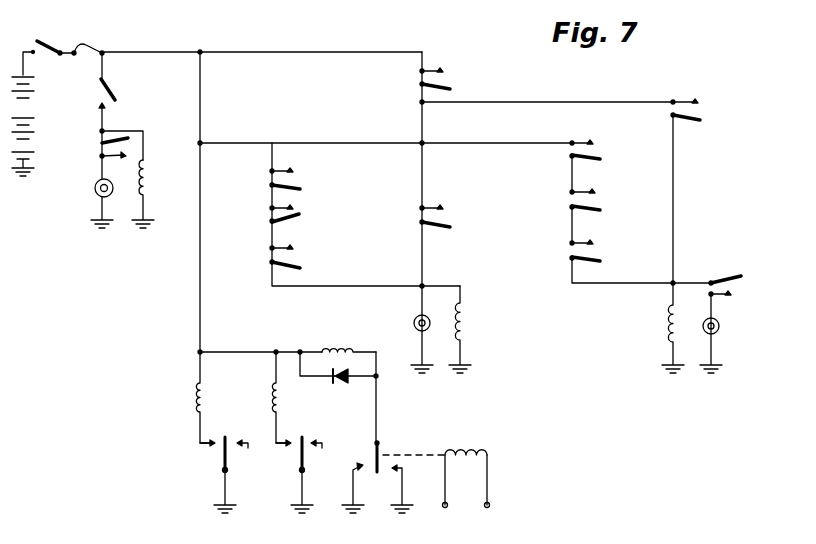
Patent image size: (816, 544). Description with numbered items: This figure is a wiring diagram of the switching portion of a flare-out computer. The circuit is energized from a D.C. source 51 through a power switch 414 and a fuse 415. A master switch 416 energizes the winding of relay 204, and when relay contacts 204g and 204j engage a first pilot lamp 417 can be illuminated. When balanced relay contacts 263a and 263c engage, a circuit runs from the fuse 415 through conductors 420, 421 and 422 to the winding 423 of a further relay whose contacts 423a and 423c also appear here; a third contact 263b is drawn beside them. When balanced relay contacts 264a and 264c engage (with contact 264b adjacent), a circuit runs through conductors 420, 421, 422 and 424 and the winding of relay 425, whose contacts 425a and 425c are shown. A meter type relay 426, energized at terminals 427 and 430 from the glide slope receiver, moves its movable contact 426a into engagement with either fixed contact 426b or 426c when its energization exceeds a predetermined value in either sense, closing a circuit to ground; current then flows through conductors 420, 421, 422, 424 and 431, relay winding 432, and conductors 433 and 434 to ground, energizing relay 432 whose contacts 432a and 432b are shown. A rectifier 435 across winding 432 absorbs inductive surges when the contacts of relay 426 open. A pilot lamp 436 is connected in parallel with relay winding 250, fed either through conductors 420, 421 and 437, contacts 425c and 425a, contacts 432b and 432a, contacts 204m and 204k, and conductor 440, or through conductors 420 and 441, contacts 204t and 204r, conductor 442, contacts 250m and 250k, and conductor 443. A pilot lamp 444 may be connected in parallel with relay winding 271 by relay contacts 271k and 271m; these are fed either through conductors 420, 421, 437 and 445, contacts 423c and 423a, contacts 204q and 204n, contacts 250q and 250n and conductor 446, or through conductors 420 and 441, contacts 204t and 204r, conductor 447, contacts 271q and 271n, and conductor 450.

The D.C. source 51 is at (23, 108).
The power switch 414 is at (44, 41).
The fuse 415 is at (82, 46).
The master switch 416 is at (118, 88).
The first pilot lamp 417 is at (98, 190).
The conductor 420 is at (142, 52).
The conductor 421 is at (200, 89).
The conductor 422 is at (200, 258).
The relay winding 423 is at (201, 388).
The conductor 424 is at (216, 352).
The relay 425 is at (279, 396).
The meter type relay 426 is at (472, 449).
The terminal 427 is at (449, 505).
The terminal 430 is at (491, 500).
The conductor 431 is at (296, 351).
The relay winding 432 is at (339, 351).
The conductor 433 is at (382, 358).
The conductor 434 is at (377, 390).
The rectifier 435 is at (338, 378).
The pilot lamp 436 is at (418, 314).
The conductor 437 is at (237, 143).
The conductor 440 is at (264, 286).
The conductor 441 is at (239, 52).
The conductor 442 is at (420, 128).
The conductor 443 is at (424, 252).
The pilot lamp 444 is at (719, 338).
The conductor 445 is at (456, 140).
The conductor 446 is at (618, 285).
The conductor 447 is at (526, 102).
The conductor 450 is at (678, 188).
The relay 204 is at (146, 186).
The relay contact 204g is at (101, 133).
The relay contact 204j is at (102, 155).
The relay contact 204k is at (306, 267).
The relay contact 204m is at (306, 251).
The relay contact 204n is at (601, 208).
The relay contact 204q is at (598, 196).
The relay contact 204r is at (448, 89).
The relay contact 204t is at (442, 70).
The relay winding 250 is at (464, 313).
The relay contact 250k is at (455, 229).
The relay contact 250m is at (451, 208).
The relay contact 250n is at (598, 260).
The relay contact 250q is at (598, 247).
The relay winding 271 is at (670, 323).
The relay contact 271k is at (731, 276).
The relay contact 271m is at (724, 297).
The relay contact 271n is at (696, 121).
The relay contact 271q is at (687, 98).
The balanced relay contact 263a is at (212, 442).
The balanced relay contact 263b is at (248, 448).
The balanced relay contact 263c is at (208, 446).
The balanced relay contact 264a is at (304, 452).
The balanced relay contact 264b is at (322, 442).
The balanced relay contact 264c is at (280, 442).
The relay contact 423a is at (604, 158).
The relay contact 423c is at (593, 147).
The relay contact 425a is at (300, 189).
The relay contact 425c is at (298, 174).
The movable contact 426a is at (383, 450).
The fixed contact 426b is at (362, 480).
The fixed contact 426c is at (418, 478).
The relay contact 432a is at (300, 225).
The relay contact 432b is at (300, 211).